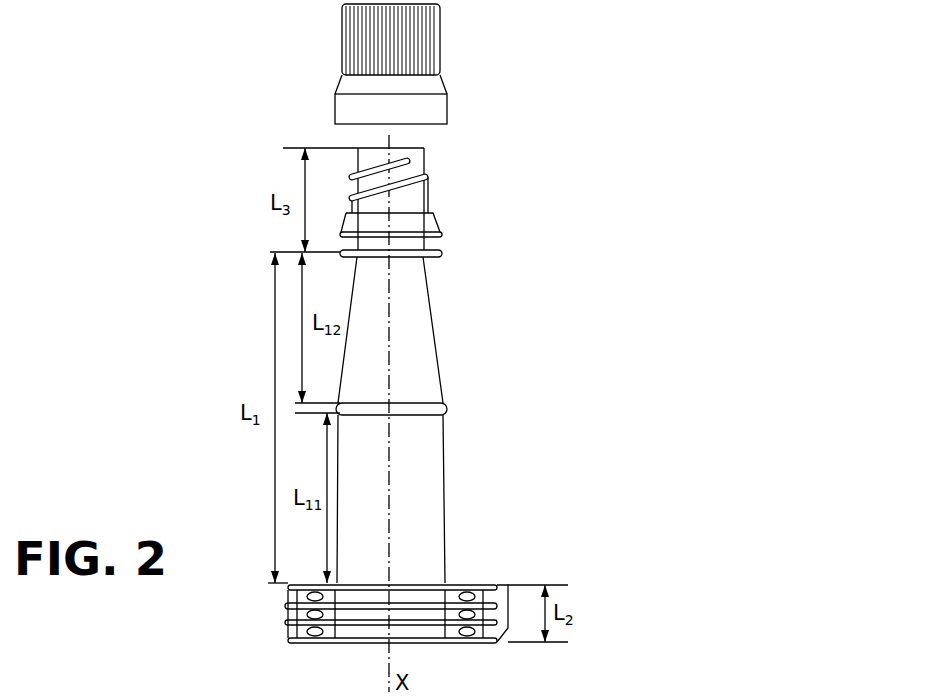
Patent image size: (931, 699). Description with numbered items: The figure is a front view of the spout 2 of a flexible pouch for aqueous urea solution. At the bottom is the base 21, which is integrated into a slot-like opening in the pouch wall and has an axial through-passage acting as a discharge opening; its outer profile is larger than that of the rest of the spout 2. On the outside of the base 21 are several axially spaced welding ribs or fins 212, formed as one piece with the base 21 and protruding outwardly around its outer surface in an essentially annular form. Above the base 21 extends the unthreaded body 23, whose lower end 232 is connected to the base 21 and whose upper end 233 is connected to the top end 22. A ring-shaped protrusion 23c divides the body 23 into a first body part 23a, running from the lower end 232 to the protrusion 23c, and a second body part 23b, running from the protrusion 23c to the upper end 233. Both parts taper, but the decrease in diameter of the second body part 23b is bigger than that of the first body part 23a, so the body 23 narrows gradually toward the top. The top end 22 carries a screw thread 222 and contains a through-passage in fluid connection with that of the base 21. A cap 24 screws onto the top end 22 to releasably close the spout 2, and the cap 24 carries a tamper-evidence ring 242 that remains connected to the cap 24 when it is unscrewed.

The spout 2 is at (220, 129).
The base 21 is at (344, 625).
The welding ribs or fins 212 is at (288, 640).
The top end 22 is at (412, 200).
The screw thread 222 is at (425, 177).
The body 23 is at (452, 420).
The first body part 23a is at (430, 520).
The second body part 23b is at (425, 343).
The ring-shaped protrusion 23c is at (430, 410).
The lower end of the body 232 is at (445, 582).
The upper end of the body 233 is at (423, 255).
The cap 24 is at (435, 60).
The tamper-evidence ring 242 is at (435, 111).